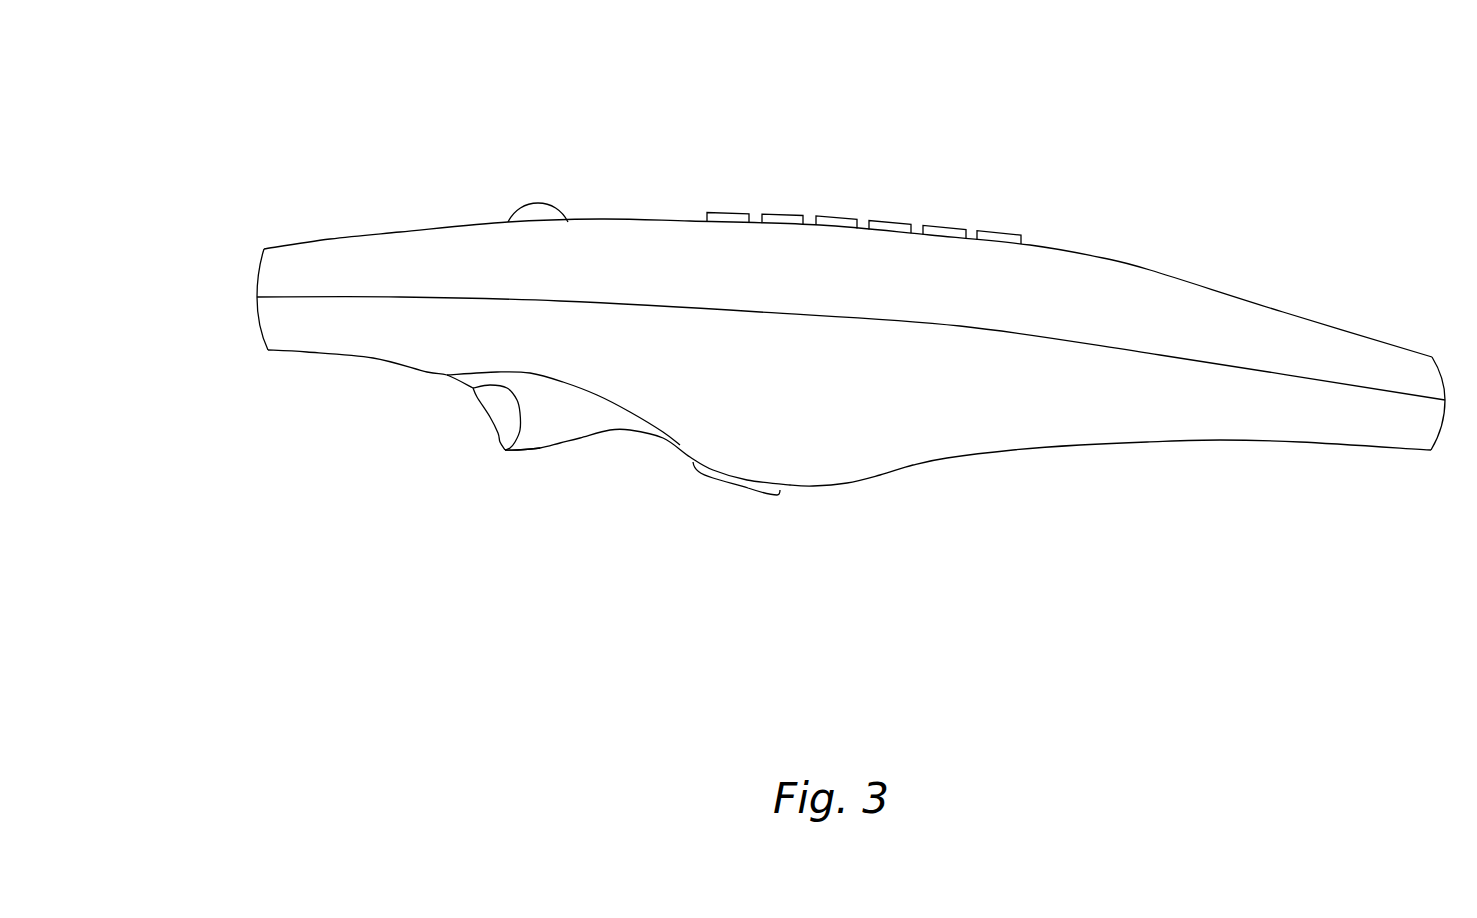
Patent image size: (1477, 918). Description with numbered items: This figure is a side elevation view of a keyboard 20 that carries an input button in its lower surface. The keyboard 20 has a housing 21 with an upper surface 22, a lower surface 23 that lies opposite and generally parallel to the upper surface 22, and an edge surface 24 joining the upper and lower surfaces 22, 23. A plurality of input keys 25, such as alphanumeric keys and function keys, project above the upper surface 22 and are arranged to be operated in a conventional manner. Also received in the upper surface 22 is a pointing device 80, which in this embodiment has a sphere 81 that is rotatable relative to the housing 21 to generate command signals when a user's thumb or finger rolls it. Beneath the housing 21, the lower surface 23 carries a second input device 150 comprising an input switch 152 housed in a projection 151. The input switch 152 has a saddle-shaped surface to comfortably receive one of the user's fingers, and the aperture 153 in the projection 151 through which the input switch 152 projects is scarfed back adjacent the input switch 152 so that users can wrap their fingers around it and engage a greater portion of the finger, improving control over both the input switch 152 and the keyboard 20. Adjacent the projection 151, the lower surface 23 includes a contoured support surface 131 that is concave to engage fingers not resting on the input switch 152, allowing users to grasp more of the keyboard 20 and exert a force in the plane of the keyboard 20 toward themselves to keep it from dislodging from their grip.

The keyboard 20 is at (857, 142).
The housing 21 is at (1378, 299).
The upper surface 22 is at (1103, 258).
The lower surface 23 is at (1160, 443).
The edge surface 24 is at (257, 297).
The input keys 25 is at (730, 211).
The pointing device 80 is at (529, 160).
The sphere 81 is at (537, 203).
The contoured support surface 131 is at (737, 487).
The second input device 150 is at (477, 499).
The projection 151 is at (567, 440).
The input switch 152 is at (490, 417).
The aperture 153 is at (522, 415).